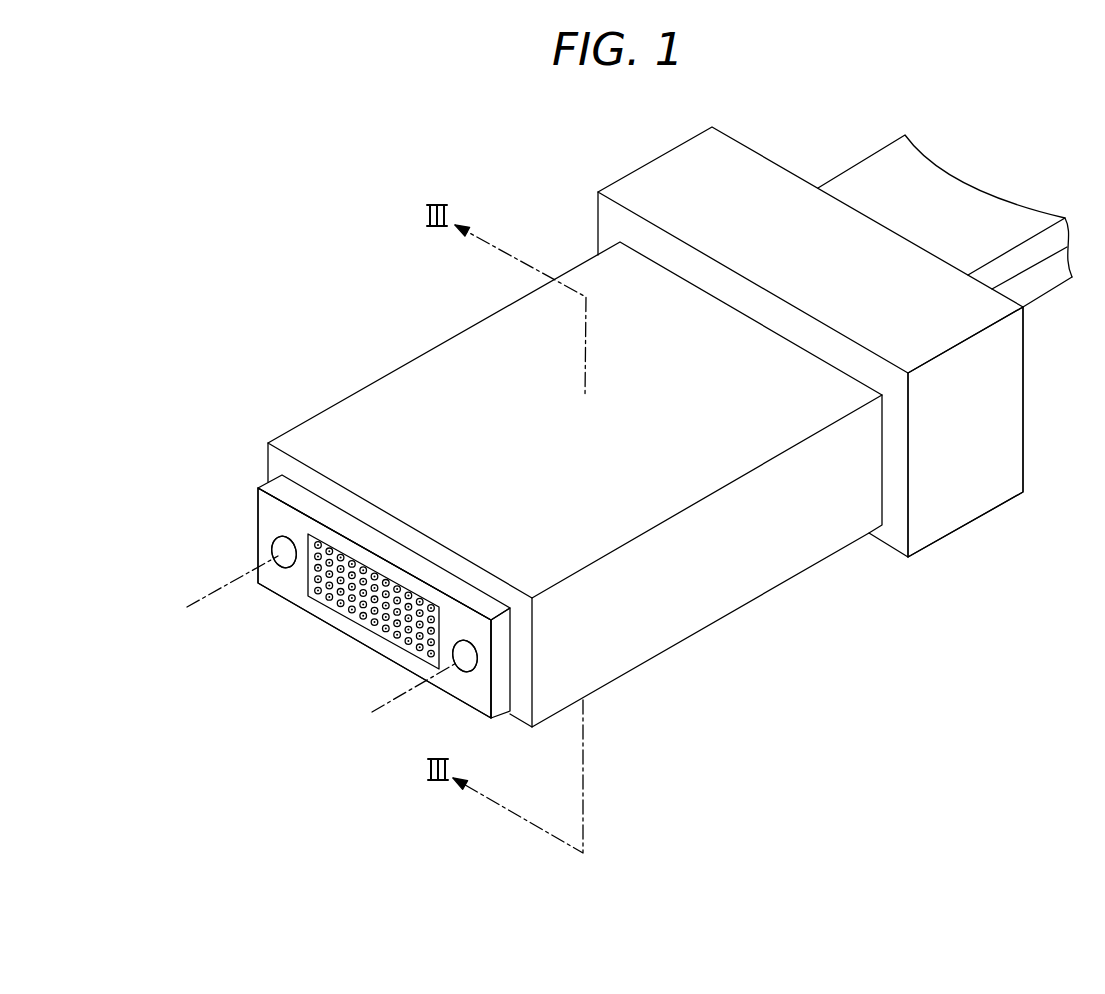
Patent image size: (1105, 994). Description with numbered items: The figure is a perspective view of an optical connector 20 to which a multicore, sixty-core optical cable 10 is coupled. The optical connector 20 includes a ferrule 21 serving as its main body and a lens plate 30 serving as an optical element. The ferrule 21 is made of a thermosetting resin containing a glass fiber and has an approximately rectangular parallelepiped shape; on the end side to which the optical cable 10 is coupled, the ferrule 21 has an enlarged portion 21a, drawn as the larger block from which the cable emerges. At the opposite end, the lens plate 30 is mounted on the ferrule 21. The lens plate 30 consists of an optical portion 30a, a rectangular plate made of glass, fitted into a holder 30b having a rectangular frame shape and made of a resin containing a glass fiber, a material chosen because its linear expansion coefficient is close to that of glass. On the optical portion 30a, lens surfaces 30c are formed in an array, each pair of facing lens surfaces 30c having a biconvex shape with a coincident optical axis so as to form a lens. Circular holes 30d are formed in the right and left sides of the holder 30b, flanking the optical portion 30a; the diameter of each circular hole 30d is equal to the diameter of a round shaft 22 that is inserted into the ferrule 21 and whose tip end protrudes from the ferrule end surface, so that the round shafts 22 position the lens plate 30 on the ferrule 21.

The optical cable 10 is at (967, 208).
The optical connector 20 is at (407, 350).
The ferrule 21 is at (650, 498).
The enlarged portion 21a is at (965, 500).
The round shaft 22 is at (278, 563).
The lens plate 30 is at (260, 484).
The optical portion 30a is at (315, 603).
The holder 30b is at (473, 620).
The lens surfaces 30c is at (366, 620).
The circular holes 30d is at (272, 547).